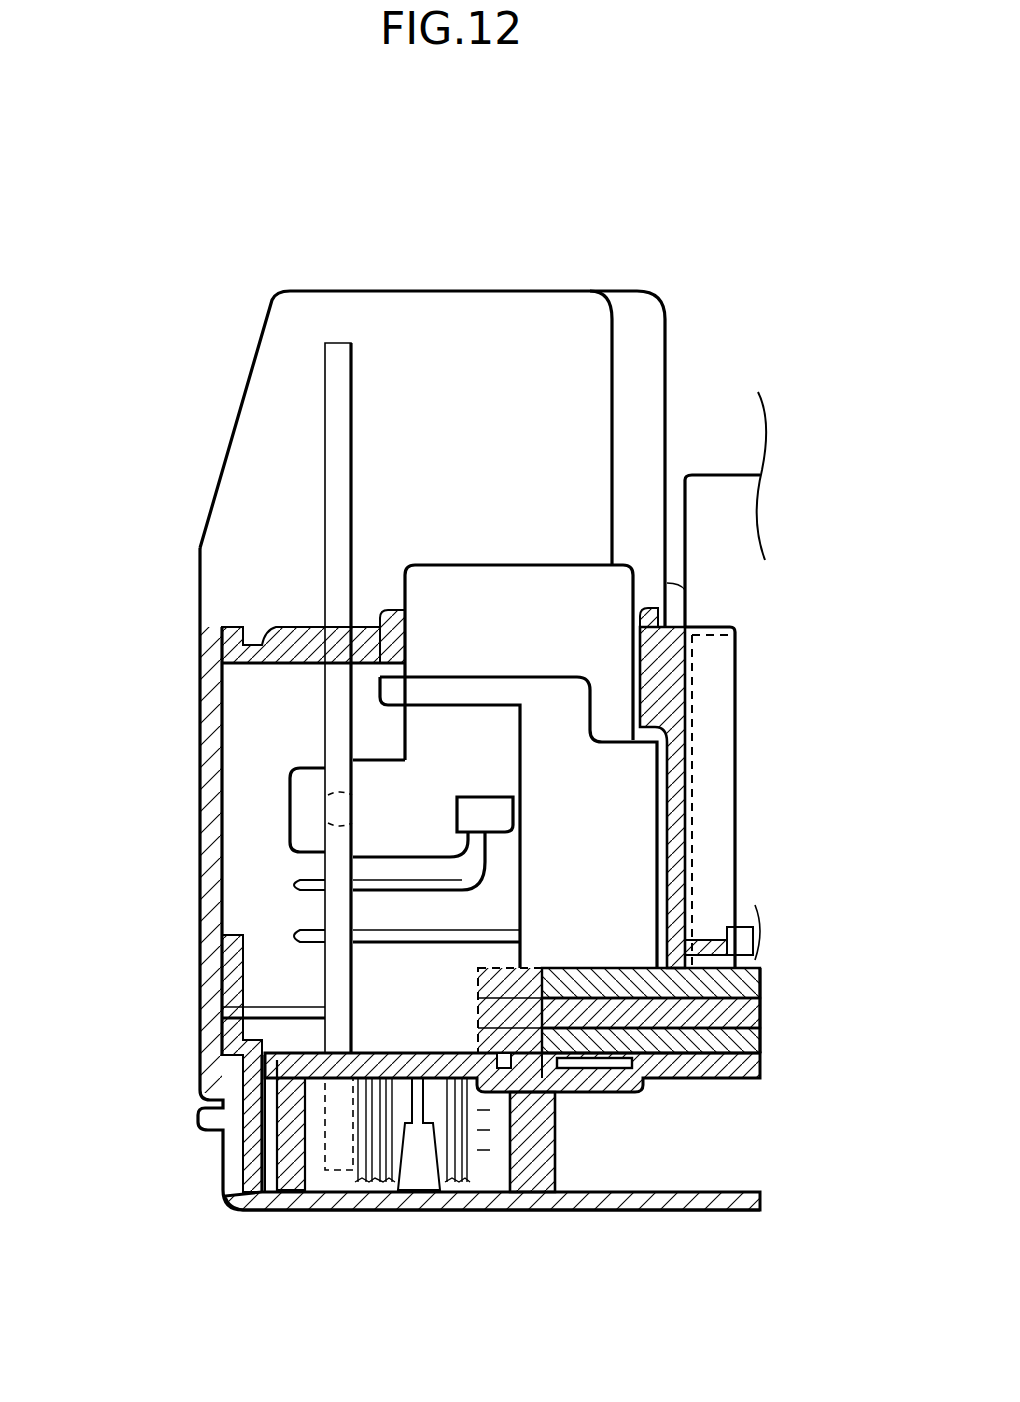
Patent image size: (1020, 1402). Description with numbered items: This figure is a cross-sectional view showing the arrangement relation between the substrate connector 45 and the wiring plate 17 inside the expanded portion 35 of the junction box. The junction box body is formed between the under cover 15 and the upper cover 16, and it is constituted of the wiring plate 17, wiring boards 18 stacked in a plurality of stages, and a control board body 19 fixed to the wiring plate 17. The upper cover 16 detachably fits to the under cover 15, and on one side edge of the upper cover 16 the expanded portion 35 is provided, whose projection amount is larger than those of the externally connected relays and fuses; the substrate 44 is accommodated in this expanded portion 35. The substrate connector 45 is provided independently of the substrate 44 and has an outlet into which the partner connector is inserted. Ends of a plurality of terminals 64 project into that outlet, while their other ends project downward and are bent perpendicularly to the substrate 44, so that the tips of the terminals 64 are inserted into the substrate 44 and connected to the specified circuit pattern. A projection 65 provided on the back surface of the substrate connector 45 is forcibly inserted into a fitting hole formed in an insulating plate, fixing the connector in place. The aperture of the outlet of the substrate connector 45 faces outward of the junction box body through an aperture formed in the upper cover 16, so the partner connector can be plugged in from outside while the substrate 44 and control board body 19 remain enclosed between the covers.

The expanded portion 35 is at (567, 275).
The substrate 44 is at (340, 400).
The control board body 19 is at (320, 490).
The substrate connector 45 is at (295, 767).
The upper cover 16 is at (205, 778).
The projection 65 is at (330, 795).
The terminals 64 is at (375, 900).
The wiring boards 18 is at (768, 968).
The wiring plate 17 is at (703, 1078).
The under cover 15 is at (420, 1212).